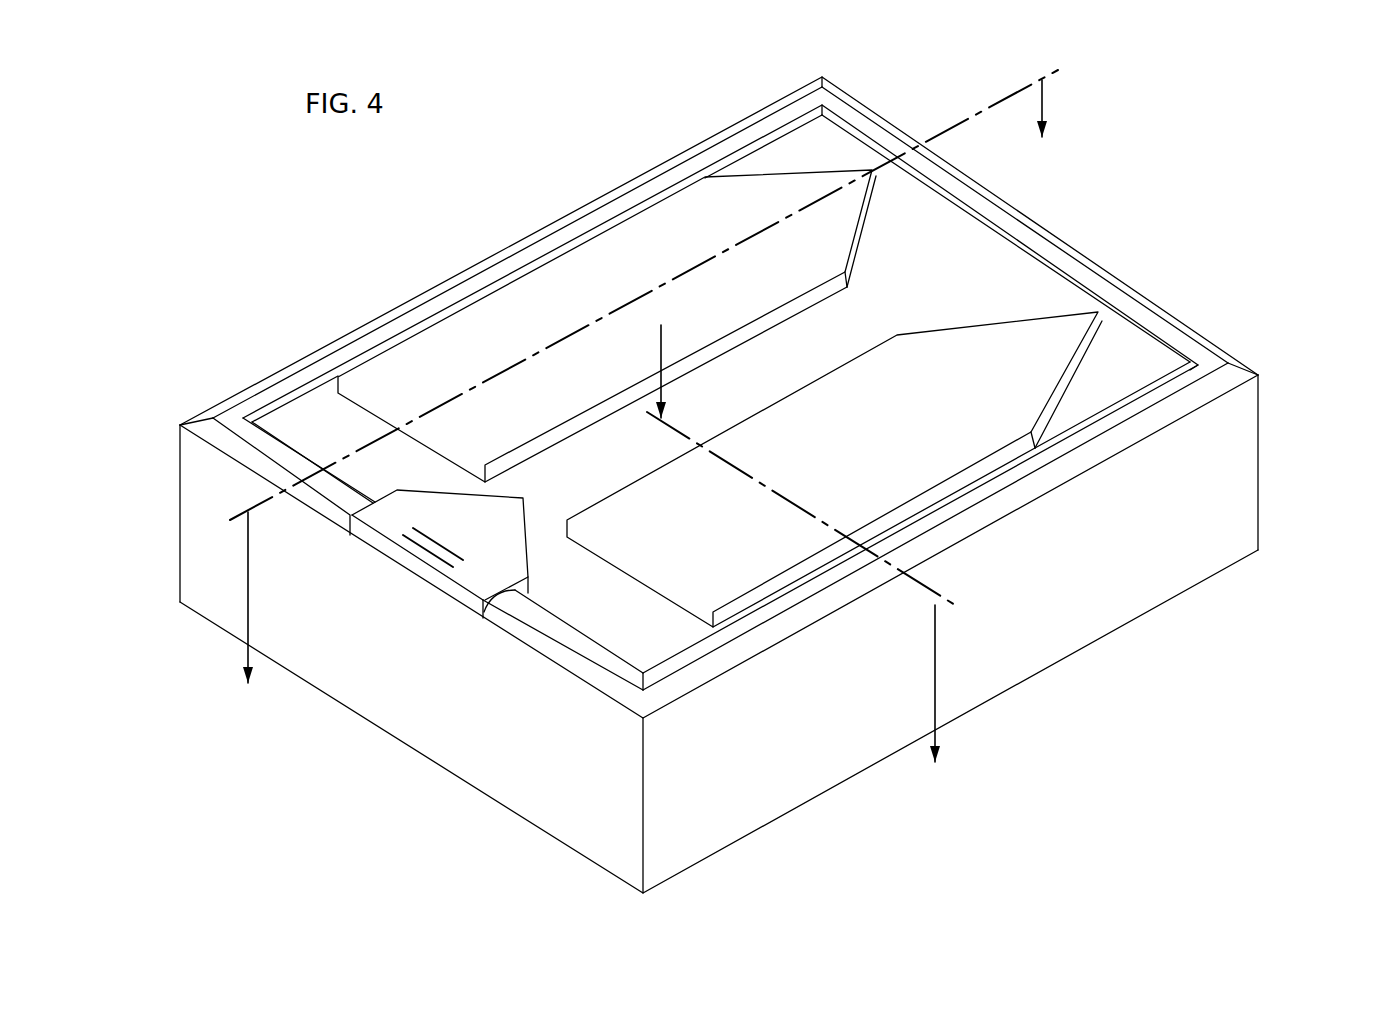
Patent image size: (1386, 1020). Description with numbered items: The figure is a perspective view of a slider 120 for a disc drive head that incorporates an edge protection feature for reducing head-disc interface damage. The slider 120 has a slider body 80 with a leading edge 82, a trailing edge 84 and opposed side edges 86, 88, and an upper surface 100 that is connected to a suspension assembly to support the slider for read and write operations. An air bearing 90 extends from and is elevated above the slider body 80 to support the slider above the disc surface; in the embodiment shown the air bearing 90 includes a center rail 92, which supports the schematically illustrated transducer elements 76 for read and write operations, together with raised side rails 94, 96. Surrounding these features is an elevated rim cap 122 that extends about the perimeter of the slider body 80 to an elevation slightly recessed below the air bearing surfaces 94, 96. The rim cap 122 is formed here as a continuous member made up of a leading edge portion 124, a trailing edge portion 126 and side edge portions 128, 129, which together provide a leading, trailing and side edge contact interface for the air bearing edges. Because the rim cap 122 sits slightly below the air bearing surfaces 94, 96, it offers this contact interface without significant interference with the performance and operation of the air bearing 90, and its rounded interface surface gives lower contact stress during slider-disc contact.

The slider 120 is at (1228, 207).
The upper surface 100 is at (1095, 640).
The leading edge 82 is at (878, 120).
The side edge portion 128 is at (474, 288).
The rim cap 122 is at (1085, 268).
The side edge 86 is at (262, 388).
The side edge 88 is at (745, 652).
The trailing edge 84 is at (568, 660).
The trailing edge portion 126 is at (615, 673).
The leading edge portion 124 is at (1140, 312).
The side edge portion 129 is at (983, 500).
The slider body 80 is at (1142, 367).
The air bearing 90 is at (962, 383).
The raised side rail 94 is at (738, 293).
The raised side rail 96 is at (821, 501).
The center rail 92 is at (476, 533).
The transducer elements 76 is at (427, 565).